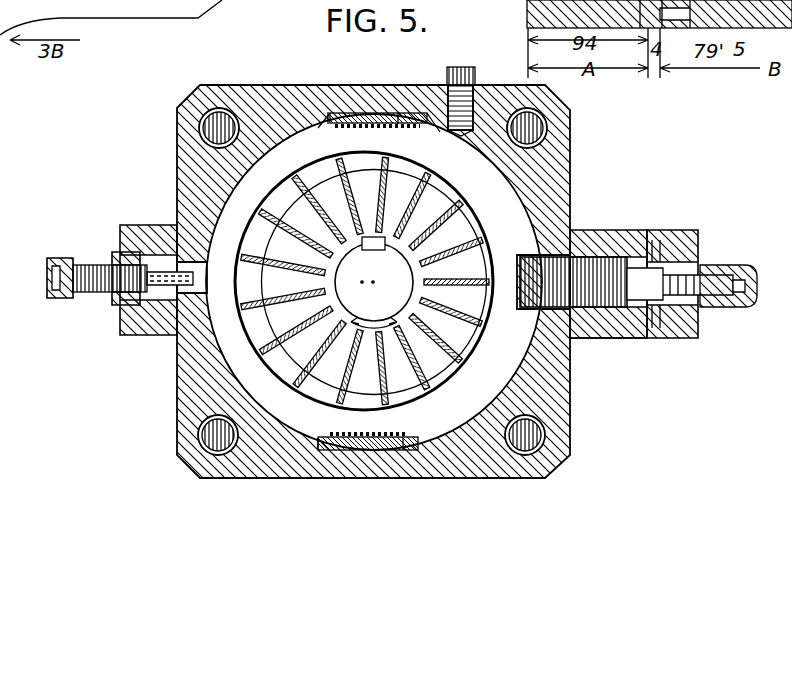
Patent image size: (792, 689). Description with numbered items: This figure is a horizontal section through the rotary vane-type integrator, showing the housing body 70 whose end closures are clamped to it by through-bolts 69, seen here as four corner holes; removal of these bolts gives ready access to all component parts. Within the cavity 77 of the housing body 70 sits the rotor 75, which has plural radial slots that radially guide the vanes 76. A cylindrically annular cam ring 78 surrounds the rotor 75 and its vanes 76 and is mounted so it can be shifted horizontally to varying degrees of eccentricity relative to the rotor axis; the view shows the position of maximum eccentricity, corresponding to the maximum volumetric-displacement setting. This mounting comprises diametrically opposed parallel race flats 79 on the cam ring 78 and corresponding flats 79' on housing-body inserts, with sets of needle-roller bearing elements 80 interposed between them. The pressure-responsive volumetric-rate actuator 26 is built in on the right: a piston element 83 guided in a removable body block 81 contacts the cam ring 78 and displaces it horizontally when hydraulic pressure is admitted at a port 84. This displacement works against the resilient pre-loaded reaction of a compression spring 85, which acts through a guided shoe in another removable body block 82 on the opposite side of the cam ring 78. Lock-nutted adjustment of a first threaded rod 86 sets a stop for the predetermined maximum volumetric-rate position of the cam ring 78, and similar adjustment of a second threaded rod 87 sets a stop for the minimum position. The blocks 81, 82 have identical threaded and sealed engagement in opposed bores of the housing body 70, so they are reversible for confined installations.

The pressure-responsive volumetric-rate actuator 26 is at (629, 224).
The bolts 69 is at (222, 108).
The housing body 70 is at (388, 102).
The rotor 75 is at (437, 200).
The vanes 76 is at (426, 172).
The cavity 77 is at (325, 112).
The cam ring 78 is at (482, 198).
The race flats 79 is at (344, 318).
The flats on housing-body inserts 79' is at (384, 284).
The needle-roller bearing elements 80 is at (350, 113).
The removable body block 81 is at (596, 346).
The removable body block 82 is at (126, 226).
The piston element 83 is at (584, 262).
The port 84 is at (665, 235).
The compression spring 85 is at (140, 252).
The first threaded rod 86 is at (100, 262).
The second threaded rod 87 is at (702, 268).